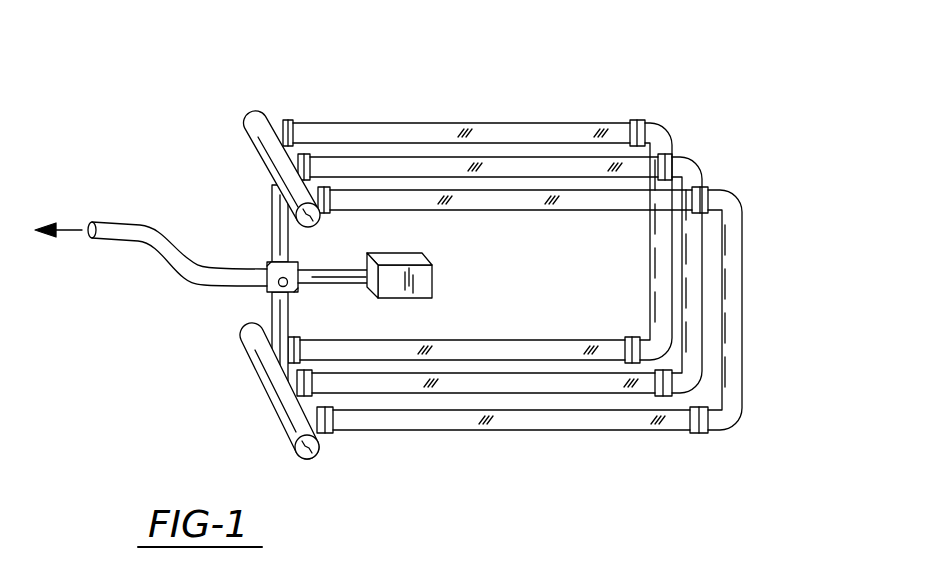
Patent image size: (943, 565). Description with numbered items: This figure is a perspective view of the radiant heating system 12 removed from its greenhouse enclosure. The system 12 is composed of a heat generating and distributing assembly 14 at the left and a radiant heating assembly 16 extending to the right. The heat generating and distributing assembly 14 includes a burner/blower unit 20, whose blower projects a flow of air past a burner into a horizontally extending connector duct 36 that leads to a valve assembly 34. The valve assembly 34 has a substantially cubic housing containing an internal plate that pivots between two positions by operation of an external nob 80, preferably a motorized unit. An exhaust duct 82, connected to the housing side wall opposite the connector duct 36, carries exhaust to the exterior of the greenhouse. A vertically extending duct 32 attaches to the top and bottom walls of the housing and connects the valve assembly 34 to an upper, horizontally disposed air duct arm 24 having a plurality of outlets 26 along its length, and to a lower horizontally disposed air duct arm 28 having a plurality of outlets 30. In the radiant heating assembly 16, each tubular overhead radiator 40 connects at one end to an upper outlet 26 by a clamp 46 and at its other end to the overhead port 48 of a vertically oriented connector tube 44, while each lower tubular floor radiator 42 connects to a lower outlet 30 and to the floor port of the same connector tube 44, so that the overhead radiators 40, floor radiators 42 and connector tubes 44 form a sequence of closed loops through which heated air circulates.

The radiant heating system 12 is at (545, 450).
The heat generating and distributing assembly 14 is at (313, 65).
The radiant heating assembly 16 is at (735, 65).
The burner/blower unit 20 is at (427, 262).
The upper air duct arm 24 is at (245, 130).
The outlets 26 is at (263, 166).
The lower air duct arm 28 is at (250, 362).
The outlets 30 is at (292, 413).
The vertically extending duct 32 is at (270, 200).
The valve assembly 34 is at (268, 272).
The connector duct 36 is at (356, 284).
The tubular overhead radiators 40 is at (542, 197).
The lower tubular floor radiators 42 is at (597, 417).
The connector tubes 44 is at (663, 313).
The clamp 46 is at (340, 200).
The overhead port 48 is at (698, 189).
The external nob 80 is at (297, 292).
The exhaust duct 82 is at (230, 287).